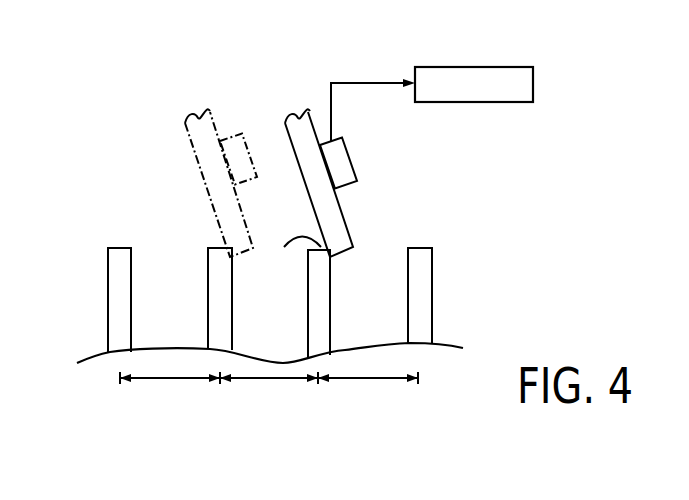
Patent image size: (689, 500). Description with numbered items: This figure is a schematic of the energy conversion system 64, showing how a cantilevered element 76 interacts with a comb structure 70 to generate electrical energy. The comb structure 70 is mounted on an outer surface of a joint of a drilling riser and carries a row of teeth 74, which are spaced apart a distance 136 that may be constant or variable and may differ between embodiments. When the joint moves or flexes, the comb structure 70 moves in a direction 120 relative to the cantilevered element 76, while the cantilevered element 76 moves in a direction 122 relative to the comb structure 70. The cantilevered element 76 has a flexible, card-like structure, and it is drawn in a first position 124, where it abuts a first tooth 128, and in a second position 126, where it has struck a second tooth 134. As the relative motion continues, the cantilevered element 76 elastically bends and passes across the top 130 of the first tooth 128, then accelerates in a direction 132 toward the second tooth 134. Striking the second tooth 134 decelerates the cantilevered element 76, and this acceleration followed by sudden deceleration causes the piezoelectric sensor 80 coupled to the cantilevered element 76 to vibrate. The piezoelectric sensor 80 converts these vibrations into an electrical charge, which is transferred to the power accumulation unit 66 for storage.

The energy conversion system 64 is at (82, 154).
The power accumulation unit 66 is at (533, 85).
The comb structure 70 is at (506, 270).
The teeth 74 is at (120, 298).
The cantilevered element 76 is at (213, 188).
The piezoelectric sensor 80 is at (232, 140).
The direction 120 is at (335, 437).
The direction 122 is at (233, 35).
The first position 124 is at (315, 85).
The second position 126 is at (185, 100).
The first tooth 128 is at (323, 272).
The top 130 is at (290, 257).
The direction 132 is at (308, 216).
The second tooth 134 is at (220, 328).
The distance 136 is at (270, 380).